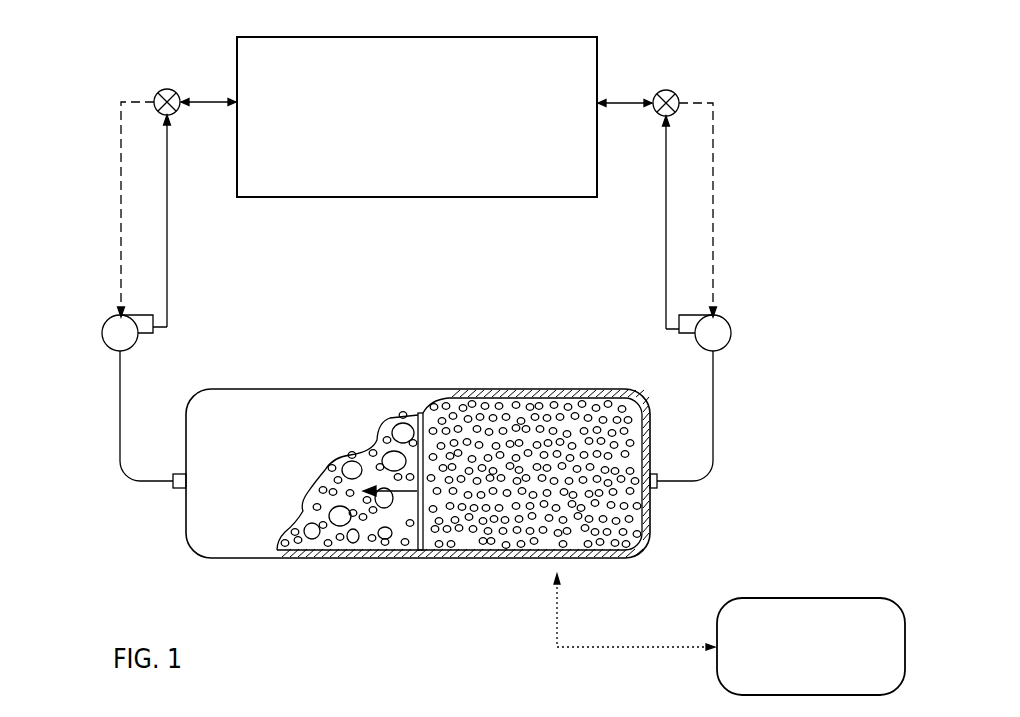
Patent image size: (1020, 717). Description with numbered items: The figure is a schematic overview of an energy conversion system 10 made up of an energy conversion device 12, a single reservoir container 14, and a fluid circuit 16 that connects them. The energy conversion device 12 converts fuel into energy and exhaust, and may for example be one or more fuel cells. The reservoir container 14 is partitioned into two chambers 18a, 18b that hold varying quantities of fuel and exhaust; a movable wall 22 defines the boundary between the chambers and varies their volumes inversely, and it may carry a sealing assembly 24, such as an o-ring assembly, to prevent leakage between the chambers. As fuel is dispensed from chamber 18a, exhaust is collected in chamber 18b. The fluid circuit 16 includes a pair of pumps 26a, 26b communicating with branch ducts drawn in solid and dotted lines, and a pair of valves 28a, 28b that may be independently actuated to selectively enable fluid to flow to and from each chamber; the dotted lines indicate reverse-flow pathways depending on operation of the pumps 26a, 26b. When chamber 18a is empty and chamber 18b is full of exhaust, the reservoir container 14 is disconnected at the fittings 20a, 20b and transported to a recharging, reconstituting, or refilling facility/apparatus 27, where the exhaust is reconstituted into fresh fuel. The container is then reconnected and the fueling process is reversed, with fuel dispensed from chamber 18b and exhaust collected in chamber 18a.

The energy conversion system 10 is at (58, 500).
The energy conversion device 12 is at (606, 52).
The reservoir container 14 is at (504, 570).
The fluid circuit 16 is at (95, 218).
The chamber 18a is at (353, 550).
The chamber 18b is at (594, 550).
The fitting 20a is at (177, 490).
The fitting 20b is at (662, 490).
The movable wall 22 is at (428, 557).
The sealing assembly 24 is at (420, 560).
The pump 26a is at (108, 346).
The pump 26b is at (731, 326).
The facility/apparatus 27 is at (843, 597).
The valve 28a is at (162, 91).
The valve 28b is at (673, 92).